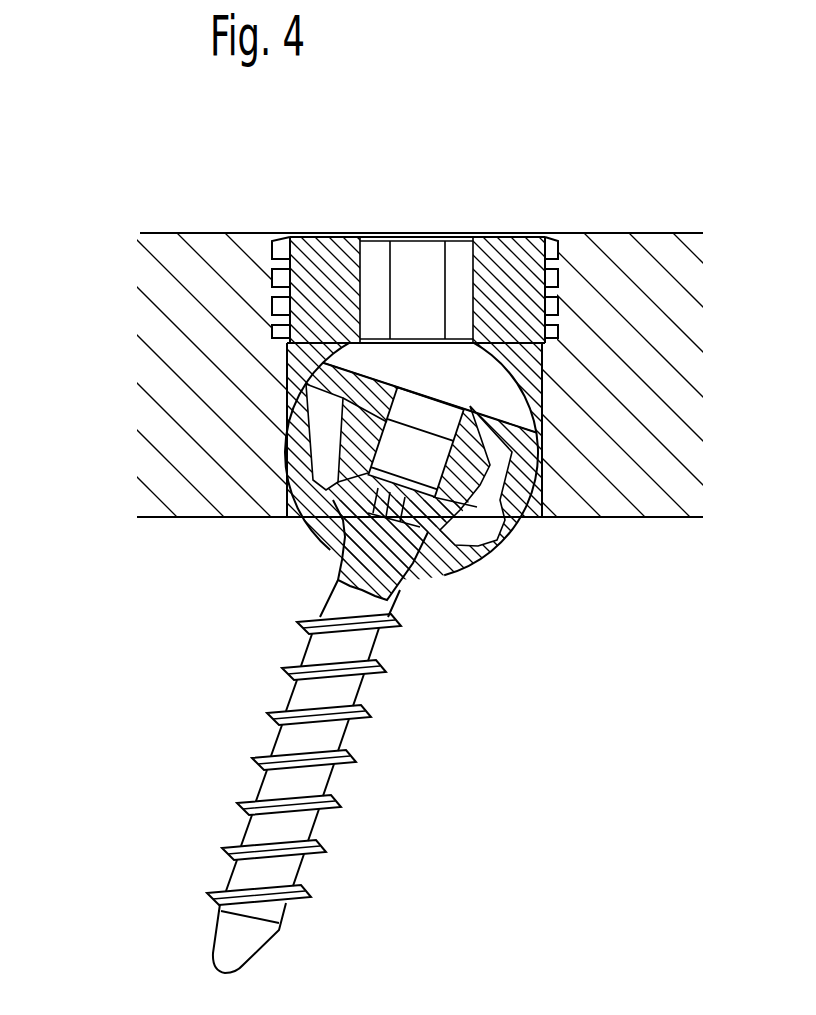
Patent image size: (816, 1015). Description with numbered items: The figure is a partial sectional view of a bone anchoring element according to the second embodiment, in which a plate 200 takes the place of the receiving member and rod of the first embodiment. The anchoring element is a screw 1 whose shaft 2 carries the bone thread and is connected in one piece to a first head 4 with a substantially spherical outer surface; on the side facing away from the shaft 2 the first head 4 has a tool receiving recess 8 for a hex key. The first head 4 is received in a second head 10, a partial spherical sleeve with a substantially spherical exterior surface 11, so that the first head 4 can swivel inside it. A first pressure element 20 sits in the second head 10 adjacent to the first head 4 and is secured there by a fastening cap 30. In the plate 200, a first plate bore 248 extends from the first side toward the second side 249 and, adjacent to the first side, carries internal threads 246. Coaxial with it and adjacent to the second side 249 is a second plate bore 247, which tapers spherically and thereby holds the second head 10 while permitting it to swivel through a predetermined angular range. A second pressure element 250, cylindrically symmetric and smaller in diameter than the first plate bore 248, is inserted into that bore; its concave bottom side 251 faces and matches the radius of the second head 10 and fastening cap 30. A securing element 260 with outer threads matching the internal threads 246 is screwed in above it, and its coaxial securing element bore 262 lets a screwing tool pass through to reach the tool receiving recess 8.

The screw 1 is at (358, 754).
The shaft 2 is at (292, 866).
The first head 4 is at (427, 533).
The tool receiving recess 8 is at (345, 527).
The second head 10 is at (455, 553).
The spherical exterior surface 11 is at (505, 533).
The first pressure element 20 is at (527, 517).
The fastening cap 30 is at (543, 443).
The plate 200 is at (172, 442).
The internal threads 246 is at (272, 262).
The second plate bore 247 is at (287, 492).
The first plate bore 248 is at (287, 361).
The second side of the plate 249 is at (213, 518).
The second pressure element 250 is at (541, 363).
The bottom side 251 is at (492, 365).
The securing element 260 is at (327, 255).
The securing element bore 262 is at (415, 265).